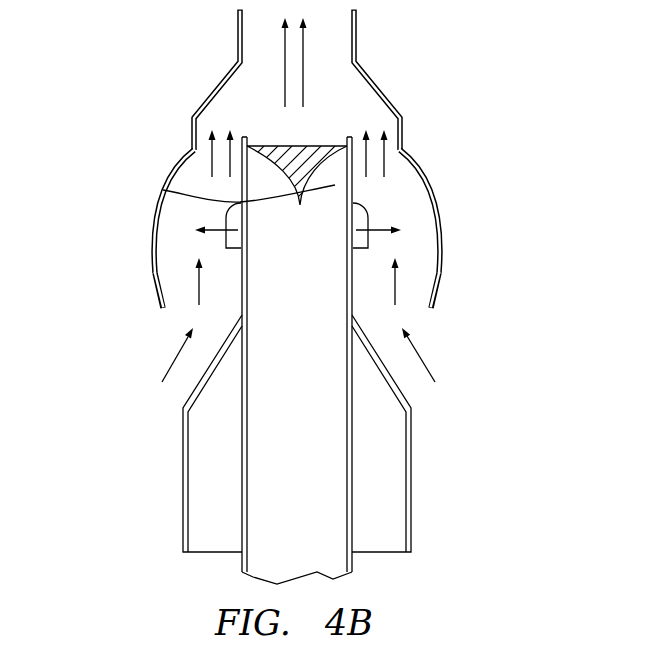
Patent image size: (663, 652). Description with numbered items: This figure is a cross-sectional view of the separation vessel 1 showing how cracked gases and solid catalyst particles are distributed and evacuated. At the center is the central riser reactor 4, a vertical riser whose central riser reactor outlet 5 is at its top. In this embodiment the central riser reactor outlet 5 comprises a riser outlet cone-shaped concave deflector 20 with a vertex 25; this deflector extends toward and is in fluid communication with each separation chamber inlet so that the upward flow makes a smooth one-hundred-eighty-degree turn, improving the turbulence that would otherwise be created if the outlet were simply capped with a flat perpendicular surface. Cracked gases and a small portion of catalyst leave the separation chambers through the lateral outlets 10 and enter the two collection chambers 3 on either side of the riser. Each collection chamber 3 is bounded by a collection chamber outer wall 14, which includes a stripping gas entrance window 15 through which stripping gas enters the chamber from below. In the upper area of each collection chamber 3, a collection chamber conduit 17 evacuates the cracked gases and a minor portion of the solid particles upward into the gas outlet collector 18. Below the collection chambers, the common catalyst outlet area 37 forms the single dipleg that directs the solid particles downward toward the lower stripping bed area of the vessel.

The separation vessel 1 is at (470, 127).
The collection chamber 3 is at (154, 238).
The central riser reactor 4 is at (308, 448).
The central riser reactor outlet 5 is at (268, 182).
The lateral outlet 10 is at (222, 225).
The collection chamber outer wall 14 is at (441, 195).
The stripping gas entrance window 15 is at (162, 333).
The collection chamber conduit 17 is at (235, 101).
The gas outlet collector 18 is at (338, 78).
The riser outlet cone-shaped concave deflector 20 is at (300, 158).
The vertex 25 is at (300, 207).
The common catalyst outlet area 37 is at (385, 520).